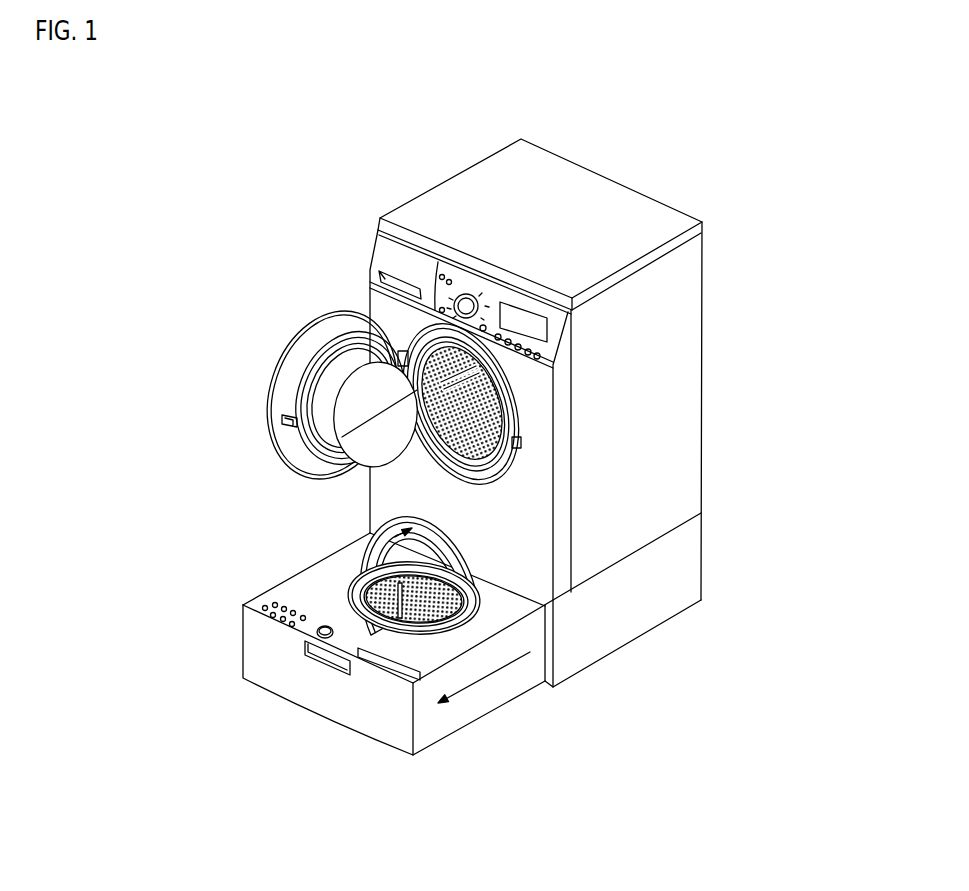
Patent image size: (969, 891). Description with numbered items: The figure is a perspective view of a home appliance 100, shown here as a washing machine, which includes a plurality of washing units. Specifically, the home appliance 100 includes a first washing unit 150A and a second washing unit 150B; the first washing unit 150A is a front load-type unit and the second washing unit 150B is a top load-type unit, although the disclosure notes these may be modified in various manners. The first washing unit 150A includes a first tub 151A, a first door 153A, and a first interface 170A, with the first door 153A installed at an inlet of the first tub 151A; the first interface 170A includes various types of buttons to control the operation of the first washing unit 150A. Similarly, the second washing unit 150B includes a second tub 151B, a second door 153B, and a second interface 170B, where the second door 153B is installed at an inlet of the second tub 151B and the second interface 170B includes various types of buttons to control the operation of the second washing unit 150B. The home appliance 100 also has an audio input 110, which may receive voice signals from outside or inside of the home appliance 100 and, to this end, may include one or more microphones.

The home appliance 100 is at (287, 96).
The audio input 110 is at (447, 264).
The first washing unit 150A is at (710, 358).
The second washing unit 150B is at (705, 556).
The first tub 151A is at (512, 421).
The second tub 151B is at (363, 603).
The first door 153A is at (295, 348).
The second door 153B is at (373, 545).
The first interface 170A is at (550, 350).
The second interface 170B is at (259, 600).